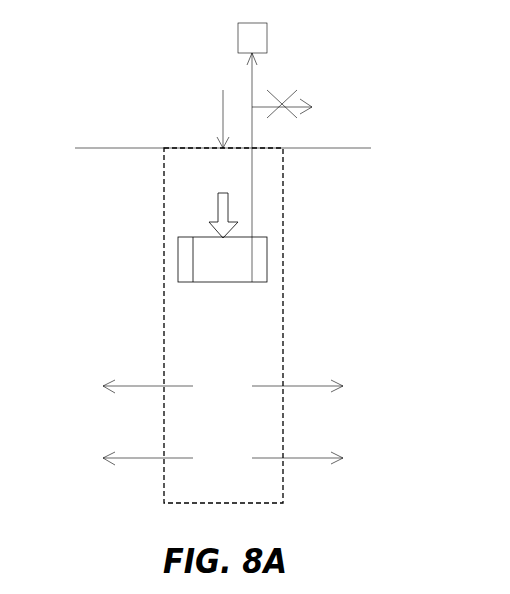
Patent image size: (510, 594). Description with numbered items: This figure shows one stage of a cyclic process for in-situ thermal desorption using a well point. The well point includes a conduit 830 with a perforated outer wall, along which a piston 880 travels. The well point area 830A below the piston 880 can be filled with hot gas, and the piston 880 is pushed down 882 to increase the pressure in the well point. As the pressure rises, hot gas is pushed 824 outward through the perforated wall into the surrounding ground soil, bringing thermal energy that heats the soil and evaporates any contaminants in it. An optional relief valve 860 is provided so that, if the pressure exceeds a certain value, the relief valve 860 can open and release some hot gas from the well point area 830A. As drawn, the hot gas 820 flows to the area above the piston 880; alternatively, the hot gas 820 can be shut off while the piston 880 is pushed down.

The relief valve 860 is at (252, 38).
The hot gas 820 is at (223, 110).
The pushing down of the piston 882 is at (228, 208).
The piston 880 is at (223, 260).
The conduit 830 is at (192, 333).
The well point area 830A is at (222, 450).
The pushing of hot gas 824 is at (312, 386).